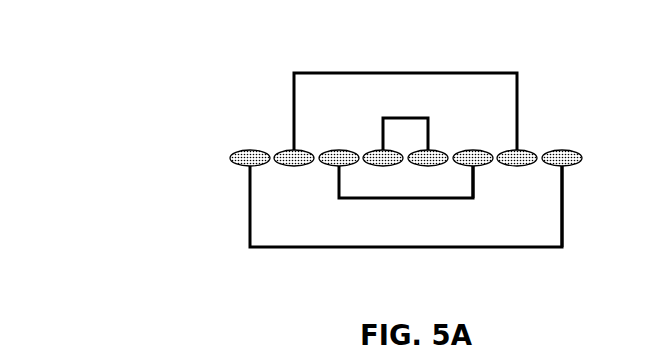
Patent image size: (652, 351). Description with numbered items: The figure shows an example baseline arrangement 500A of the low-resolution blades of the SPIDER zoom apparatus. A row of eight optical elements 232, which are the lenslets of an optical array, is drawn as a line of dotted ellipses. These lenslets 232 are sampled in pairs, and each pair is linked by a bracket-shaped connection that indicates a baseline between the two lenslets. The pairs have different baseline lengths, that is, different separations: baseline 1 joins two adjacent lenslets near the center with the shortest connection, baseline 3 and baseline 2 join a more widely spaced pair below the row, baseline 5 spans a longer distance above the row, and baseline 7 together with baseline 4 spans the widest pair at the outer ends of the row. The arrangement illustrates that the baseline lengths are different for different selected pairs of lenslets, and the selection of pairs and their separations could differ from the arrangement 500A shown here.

The baseline arrangement 500A is at (189, 29).
The optical elements 232 is at (522, 148).
The baseline 5 is at (405, 91).
The baseline 1 is at (431, 135).
The baseline 3 is at (527, 77).
The baseline 2 is at (476, 186).
The baseline 7 is at (406, 227).
The baseline 4 is at (561, 212).